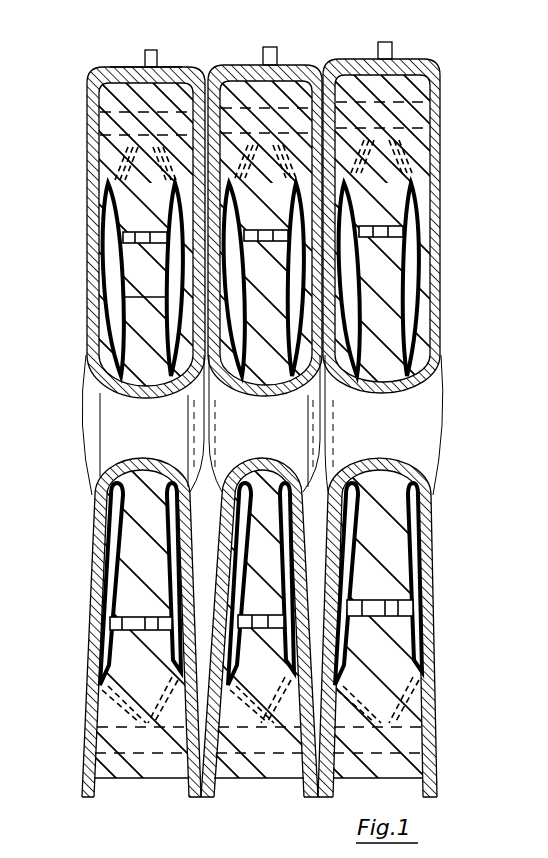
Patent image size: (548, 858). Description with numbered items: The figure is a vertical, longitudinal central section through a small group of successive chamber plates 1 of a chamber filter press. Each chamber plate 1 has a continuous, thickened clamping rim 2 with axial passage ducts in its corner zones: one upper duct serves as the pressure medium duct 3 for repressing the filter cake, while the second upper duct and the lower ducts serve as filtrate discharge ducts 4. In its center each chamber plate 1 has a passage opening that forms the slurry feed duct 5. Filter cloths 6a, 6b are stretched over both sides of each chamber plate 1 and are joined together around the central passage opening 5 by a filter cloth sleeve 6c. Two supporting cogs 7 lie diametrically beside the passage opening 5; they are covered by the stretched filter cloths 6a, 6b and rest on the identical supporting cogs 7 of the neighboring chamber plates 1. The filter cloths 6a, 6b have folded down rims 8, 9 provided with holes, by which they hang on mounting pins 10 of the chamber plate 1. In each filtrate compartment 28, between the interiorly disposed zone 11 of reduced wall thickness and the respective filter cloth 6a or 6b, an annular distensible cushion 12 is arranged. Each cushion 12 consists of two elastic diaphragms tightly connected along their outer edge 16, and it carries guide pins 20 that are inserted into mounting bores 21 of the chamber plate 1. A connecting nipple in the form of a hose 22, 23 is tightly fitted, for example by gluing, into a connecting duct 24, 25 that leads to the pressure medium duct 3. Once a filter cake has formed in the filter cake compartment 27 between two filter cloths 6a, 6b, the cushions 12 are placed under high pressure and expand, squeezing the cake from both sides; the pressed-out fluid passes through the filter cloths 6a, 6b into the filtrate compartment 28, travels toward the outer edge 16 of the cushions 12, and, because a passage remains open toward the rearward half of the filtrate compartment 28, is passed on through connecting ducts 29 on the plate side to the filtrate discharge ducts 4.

The chamber plate 1 is at (165, 93).
The clamping rim 2 is at (117, 97).
The pressure medium duct 3 is at (137, 115).
The filtrate discharge duct 4 is at (130, 755).
The slurry feed duct 5 is at (157, 430).
The filter cloth 6a is at (138, 263).
The filter cloth 6b is at (120, 297).
The filter cloth sleeve 6c is at (143, 392).
The supporting cog 7 is at (107, 427).
The folded down rim 8 is at (133, 67).
The folded down rim 9 is at (190, 75).
The mounting pin 10 is at (156, 50).
The interiorly disposed zone 11 is at (100, 238).
The distensible cushion 12 is at (420, 296).
The outer edge 16 is at (437, 170).
The guide pin 20 is at (372, 228).
The mounting bore 21 is at (395, 240).
The hose 22 is at (413, 160).
The hose 23 is at (353, 157).
The connecting duct 24 is at (368, 128).
The connecting duct 25 is at (393, 137).
The filter cake compartment 27 is at (317, 505).
The filtrate compartment 28 is at (428, 342).
The connecting duct 29 is at (160, 700).